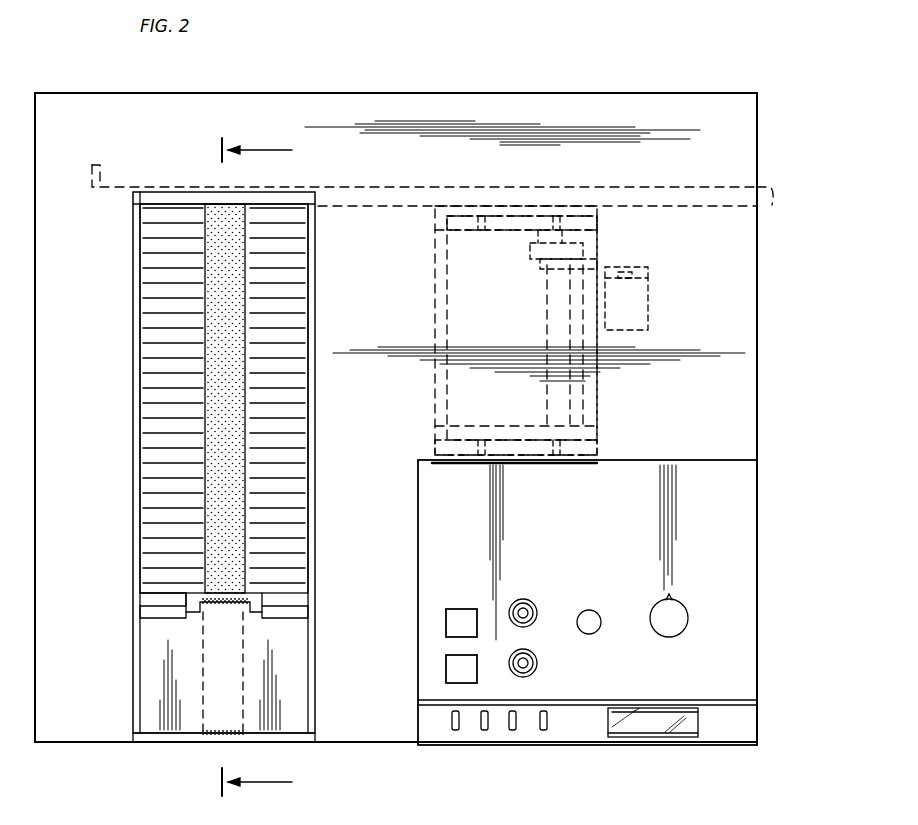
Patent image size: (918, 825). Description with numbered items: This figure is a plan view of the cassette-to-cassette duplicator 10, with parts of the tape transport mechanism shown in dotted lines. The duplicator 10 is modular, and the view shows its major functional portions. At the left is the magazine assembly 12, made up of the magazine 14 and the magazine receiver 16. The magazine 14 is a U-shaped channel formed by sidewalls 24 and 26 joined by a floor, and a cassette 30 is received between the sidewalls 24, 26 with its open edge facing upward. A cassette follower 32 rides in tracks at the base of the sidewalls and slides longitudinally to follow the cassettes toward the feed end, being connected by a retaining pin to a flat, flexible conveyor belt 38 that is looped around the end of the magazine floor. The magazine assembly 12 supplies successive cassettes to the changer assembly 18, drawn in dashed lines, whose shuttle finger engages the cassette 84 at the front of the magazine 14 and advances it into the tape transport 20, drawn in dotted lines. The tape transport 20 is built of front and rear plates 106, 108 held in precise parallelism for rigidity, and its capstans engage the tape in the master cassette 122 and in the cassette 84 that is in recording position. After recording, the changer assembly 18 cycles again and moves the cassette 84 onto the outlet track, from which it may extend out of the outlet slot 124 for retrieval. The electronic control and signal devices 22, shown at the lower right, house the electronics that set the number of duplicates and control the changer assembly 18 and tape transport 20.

The cassette-to-cassette duplicator 10 is at (566, 86).
The magazine assembly 12 is at (147, 745).
The magazine 14 is at (162, 688).
The magazine receiver 16 is at (143, 522).
The changer assembly 18 is at (435, 192).
The tape transport 20 is at (660, 306).
The electronic control and signal devices 22 is at (706, 663).
The sidewall 24 is at (133, 477).
The sidewall 26 is at (318, 492).
The cassette 30 is at (150, 303).
The cassette follower 32 is at (150, 620).
The conveyor belt 38 is at (216, 208).
The cassette 84 is at (573, 206).
The front plate 106 is at (448, 422).
The rear plate 108 is at (452, 230).
The master cassette 122 is at (570, 470).
The outlet slot 124 is at (781, 217).